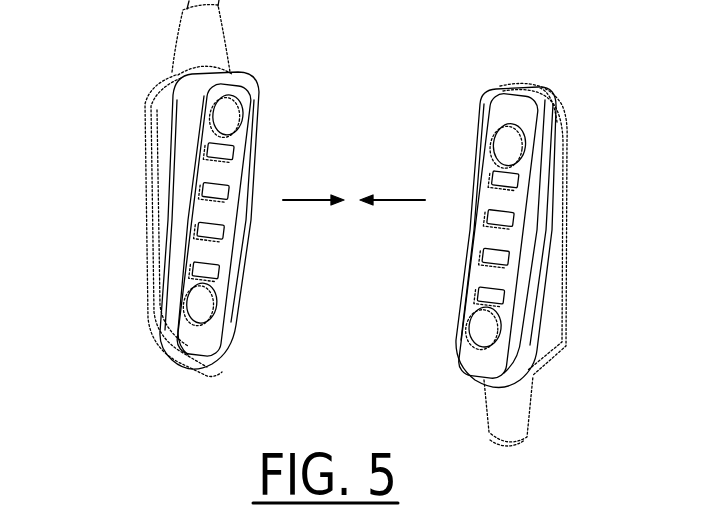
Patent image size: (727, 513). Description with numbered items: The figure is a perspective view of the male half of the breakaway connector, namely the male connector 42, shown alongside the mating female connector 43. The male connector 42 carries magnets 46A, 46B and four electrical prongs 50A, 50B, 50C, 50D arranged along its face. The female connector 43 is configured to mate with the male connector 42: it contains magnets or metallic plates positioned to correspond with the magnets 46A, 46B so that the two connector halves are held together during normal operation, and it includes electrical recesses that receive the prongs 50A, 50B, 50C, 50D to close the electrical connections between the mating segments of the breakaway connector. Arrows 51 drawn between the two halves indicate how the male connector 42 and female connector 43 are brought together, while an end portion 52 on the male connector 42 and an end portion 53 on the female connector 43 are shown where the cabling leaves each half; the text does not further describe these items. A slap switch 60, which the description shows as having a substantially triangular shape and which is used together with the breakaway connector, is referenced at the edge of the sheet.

The male connector 42 is at (128, 312).
The female connector 43 is at (582, 140).
The magnet 46A is at (235, 117).
The magnet 46B is at (208, 312).
The electrical prong 50A is at (237, 157).
The electrical prong 50B is at (228, 197).
The electrical prong 50C is at (222, 235).
The electrical prong 50D is at (213, 278).
The coupling direction arrows 51 is at (383, 193).
The cap of first remote control 52 is at (232, 12).
The stem of second remote control 53 is at (533, 442).
The slap switch 60 is at (654, 511).